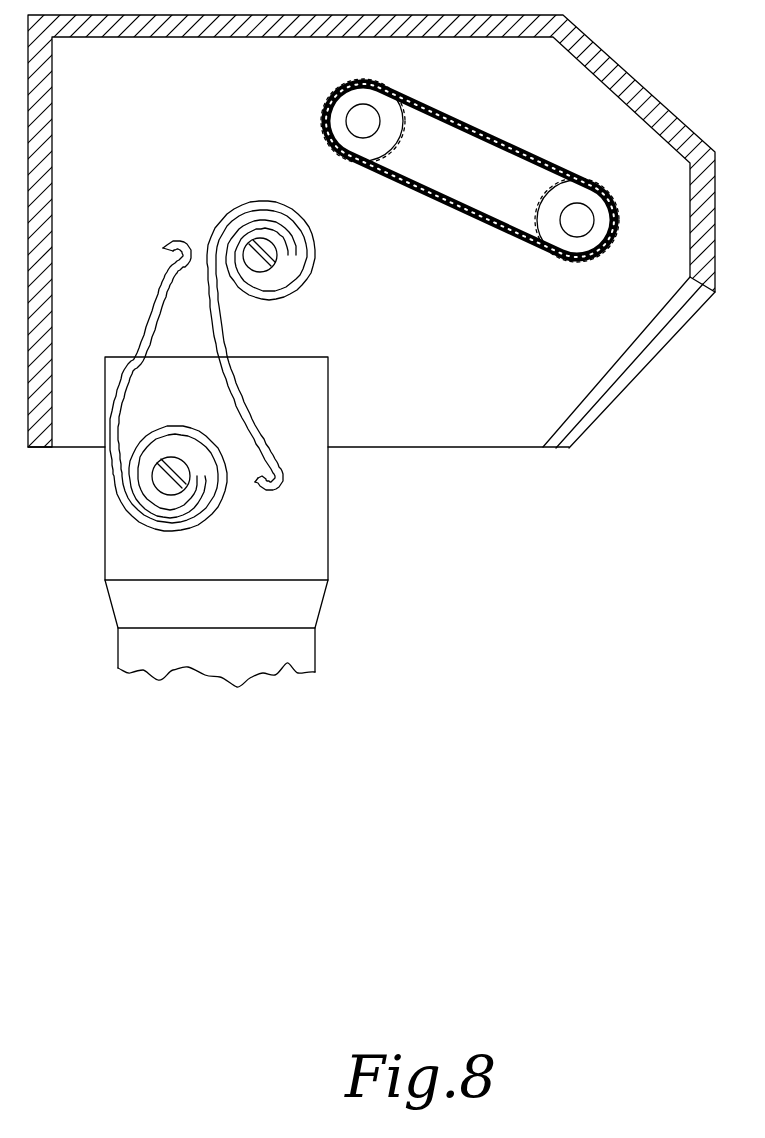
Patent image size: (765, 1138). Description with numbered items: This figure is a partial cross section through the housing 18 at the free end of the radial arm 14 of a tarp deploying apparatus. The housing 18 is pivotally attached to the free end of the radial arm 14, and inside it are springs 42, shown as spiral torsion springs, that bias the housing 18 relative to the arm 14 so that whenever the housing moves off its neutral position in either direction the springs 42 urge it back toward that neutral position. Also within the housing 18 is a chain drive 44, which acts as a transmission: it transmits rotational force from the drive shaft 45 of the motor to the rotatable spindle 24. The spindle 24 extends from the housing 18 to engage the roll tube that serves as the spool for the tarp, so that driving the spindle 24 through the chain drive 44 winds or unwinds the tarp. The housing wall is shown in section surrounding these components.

The housing 18 is at (637, 73).
The front radial arm 14 is at (303, 651).
The rotatable spindle 24 is at (562, 242).
The chain drive 44 is at (487, 128).
The drive shaft 45 is at (327, 103).
The springs 42 is at (158, 300).